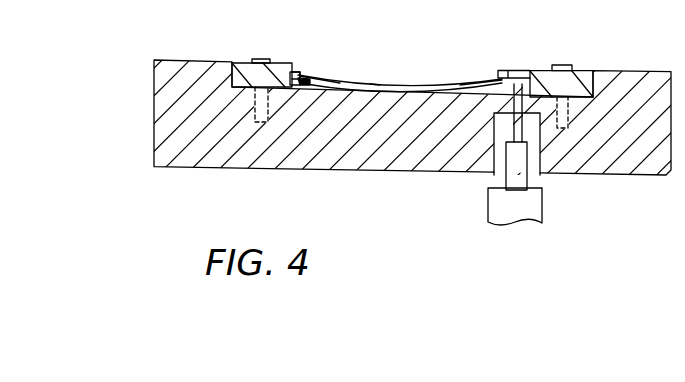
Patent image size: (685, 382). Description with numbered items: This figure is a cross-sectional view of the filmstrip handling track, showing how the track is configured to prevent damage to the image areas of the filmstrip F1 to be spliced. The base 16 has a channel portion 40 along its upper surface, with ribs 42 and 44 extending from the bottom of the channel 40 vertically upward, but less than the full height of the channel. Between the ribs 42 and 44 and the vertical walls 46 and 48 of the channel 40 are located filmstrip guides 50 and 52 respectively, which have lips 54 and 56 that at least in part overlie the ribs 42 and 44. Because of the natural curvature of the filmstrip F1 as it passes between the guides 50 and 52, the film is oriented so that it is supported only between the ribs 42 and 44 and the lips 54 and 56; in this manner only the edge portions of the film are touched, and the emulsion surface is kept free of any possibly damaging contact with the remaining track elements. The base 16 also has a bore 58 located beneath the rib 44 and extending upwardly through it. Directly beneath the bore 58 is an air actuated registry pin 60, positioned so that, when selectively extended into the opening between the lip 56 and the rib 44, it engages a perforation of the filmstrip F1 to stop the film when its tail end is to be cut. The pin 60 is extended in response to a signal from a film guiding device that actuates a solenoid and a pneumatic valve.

The base 16 is at (633, 71).
The channel portion 40 is at (487, 91).
The rib 42 is at (313, 83).
The rib 44 is at (500, 81).
The vertical wall 46 is at (252, 64).
The vertical wall 48 is at (583, 74).
The filmstrip guide 50 is at (284, 65).
The filmstrip guide 52 is at (532, 70).
The lip 54 is at (300, 74).
The lip 56 is at (499, 70).
The bore 58 is at (497, 150).
The air actuated registry pin 60 is at (530, 178).
The filmstrip F1 is at (374, 84).